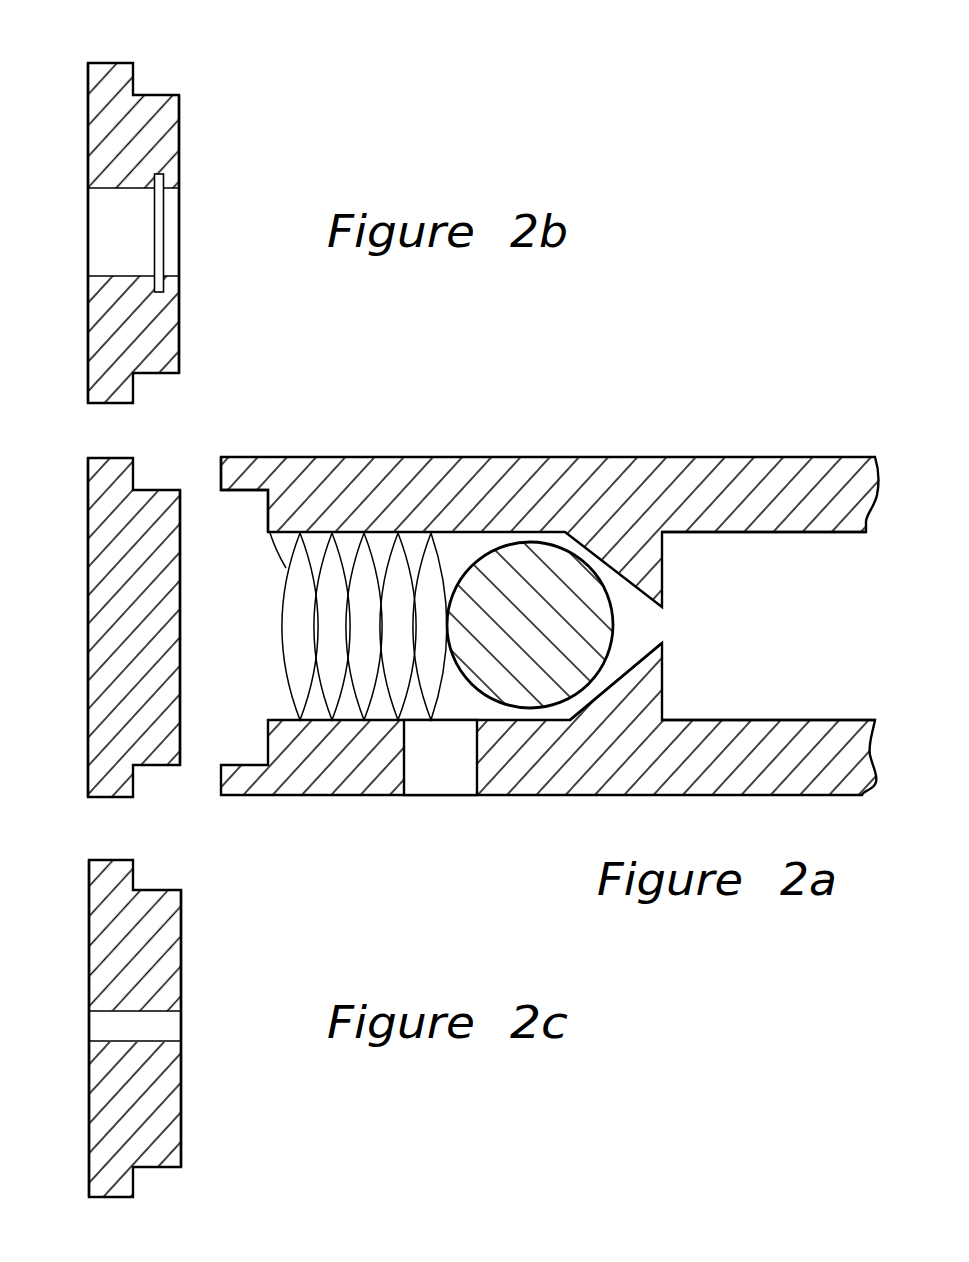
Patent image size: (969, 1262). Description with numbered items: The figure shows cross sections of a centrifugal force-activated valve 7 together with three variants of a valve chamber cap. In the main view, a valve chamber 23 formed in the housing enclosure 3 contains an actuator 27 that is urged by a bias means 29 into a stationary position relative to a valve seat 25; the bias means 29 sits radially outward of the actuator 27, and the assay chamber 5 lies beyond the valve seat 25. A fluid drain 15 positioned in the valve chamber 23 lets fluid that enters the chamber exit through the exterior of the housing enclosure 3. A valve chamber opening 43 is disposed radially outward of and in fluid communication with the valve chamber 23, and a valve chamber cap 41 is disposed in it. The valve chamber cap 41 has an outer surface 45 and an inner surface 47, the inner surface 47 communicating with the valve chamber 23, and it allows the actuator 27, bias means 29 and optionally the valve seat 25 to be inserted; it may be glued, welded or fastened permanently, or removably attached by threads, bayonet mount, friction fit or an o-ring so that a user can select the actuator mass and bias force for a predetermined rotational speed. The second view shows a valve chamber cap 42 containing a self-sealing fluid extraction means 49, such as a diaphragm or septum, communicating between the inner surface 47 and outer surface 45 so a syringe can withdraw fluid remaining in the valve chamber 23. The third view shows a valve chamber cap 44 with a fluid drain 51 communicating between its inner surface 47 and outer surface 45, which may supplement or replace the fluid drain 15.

In FIG. 2A, the housing enclosure 3 is at (510, 457).
In FIG. 2A, the assay chamber 5 is at (792, 558).
In FIG. 2A, the centrifugal force-activated valve 7 is at (322, 527).
In FIG. 2A, the fluid drain 15 is at (445, 765).
In FIG. 2A, the valve chamber 23 is at (370, 560).
In FIG. 2A, the valve seat 25 is at (617, 683).
In FIG. 2A, the actuator 27 is at (555, 581).
In FIG. 2A, the bias means 29 is at (338, 702).
In FIG. 2A, the valve chamber cap 41 is at (115, 458).
In FIG. 2B, the valve chamber cap 42 is at (117, 63).
In FIG. 2A, the valve chamber opening 43 is at (243, 512).
In FIG. 2C, the valve chamber cap 44 is at (115, 860).
In FIG. 2B, the outer surface 45 is at (88, 156).
In FIG. 2A, the outer surface 45 is at (88, 515).
In FIG. 2C, the outer surface 45 is at (89, 903).
In FIG. 2B, the inner surface 47 is at (179, 143).
In FIG. 2A, the inner surface 47 is at (180, 648).
In FIG. 2C, the inner surface 47 is at (181, 952).
In FIG. 2B, the fluid extraction means 49 is at (172, 240).
In FIG. 2C, the fluid drain 51 is at (167, 1025).